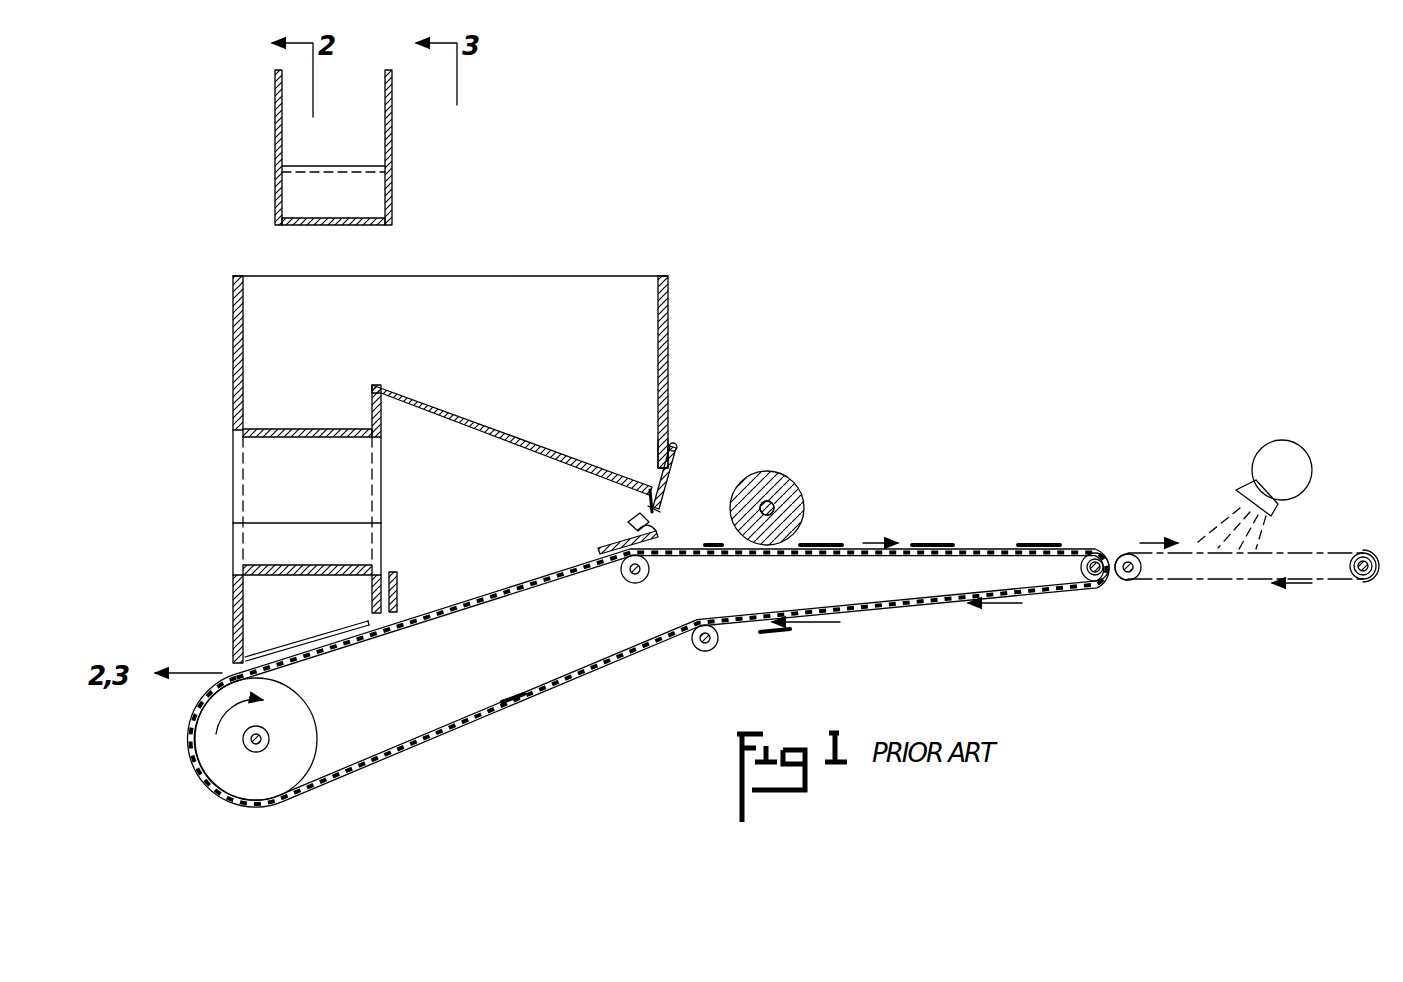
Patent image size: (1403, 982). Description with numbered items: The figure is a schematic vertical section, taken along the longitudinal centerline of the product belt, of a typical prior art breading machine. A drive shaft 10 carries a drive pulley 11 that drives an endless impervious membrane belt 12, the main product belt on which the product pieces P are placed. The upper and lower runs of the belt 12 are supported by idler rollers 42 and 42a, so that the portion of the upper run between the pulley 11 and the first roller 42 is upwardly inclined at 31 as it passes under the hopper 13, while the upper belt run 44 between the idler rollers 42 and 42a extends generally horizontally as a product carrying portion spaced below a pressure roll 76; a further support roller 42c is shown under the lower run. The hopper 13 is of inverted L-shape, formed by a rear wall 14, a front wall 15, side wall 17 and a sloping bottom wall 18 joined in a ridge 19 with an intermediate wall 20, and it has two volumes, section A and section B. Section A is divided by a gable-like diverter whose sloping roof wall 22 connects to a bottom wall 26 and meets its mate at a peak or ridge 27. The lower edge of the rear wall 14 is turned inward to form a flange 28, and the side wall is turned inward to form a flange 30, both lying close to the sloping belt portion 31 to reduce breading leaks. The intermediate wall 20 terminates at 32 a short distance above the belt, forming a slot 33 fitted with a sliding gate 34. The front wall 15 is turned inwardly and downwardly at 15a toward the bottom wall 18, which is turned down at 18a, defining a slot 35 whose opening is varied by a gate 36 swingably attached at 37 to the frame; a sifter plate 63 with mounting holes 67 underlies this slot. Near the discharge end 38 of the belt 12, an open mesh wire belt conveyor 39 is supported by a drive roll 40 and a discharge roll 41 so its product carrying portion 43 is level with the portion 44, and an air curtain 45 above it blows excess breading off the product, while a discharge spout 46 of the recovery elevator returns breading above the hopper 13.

The drive shaft 10 is at (256, 745).
The drive pulley 11 is at (322, 732).
The endless impervious membrane belt 12 is at (354, 640).
The breading hopper 13 is at (634, 260).
The rear wall 14 is at (233, 372).
The front wall 15 is at (670, 332).
The inturned portion of front wall 15a is at (666, 450).
The side wall 17 is at (498, 298).
The sloping bottom wall 18 is at (490, 432).
The downturned portion of sloping bottom wall 18a is at (640, 502).
The ridge 19 is at (376, 385).
The intermediate wall 20 is at (384, 510).
The sloping roof wall 22 is at (270, 478).
The bottom wall 26 is at (290, 568).
The peak or ridge 27 is at (294, 430).
The flange 28 is at (236, 652).
The flange 30 is at (300, 640).
The upwardly sloping portion of upper belt run 31 is at (472, 604).
The bottom of intermediate wall 32 is at (368, 618).
The slot 33 is at (393, 602).
The sliding gate 34 is at (394, 572).
The slot 35 is at (652, 470).
The gate 36 is at (672, 482).
The pivot attachment 37 is at (679, 447).
The discharge end 38 is at (1100, 552).
The open mesh wire belt conveyor 39 is at (1326, 553).
The drive roll 40 is at (1128, 580).
The discharge roll 41 is at (1360, 578).
The idler roller 42 is at (632, 583).
The idler roller 42a is at (1090, 578).
The support roller 42c is at (702, 651).
The product carrying portion of wire belt 43 is at (1288, 552).
The upper belt run 44 is at (986, 548).
The air curtain 45 is at (1212, 522).
The discharge spout 46 is at (392, 125).
The top flow sifter plate 63 is at (668, 536).
The mounting holes 67 is at (658, 518).
The pressure roll 76 is at (792, 478).
The hopper section A is at (258, 296).
The hopper section B is at (566, 260).
The product pieces P is at (580, 561).